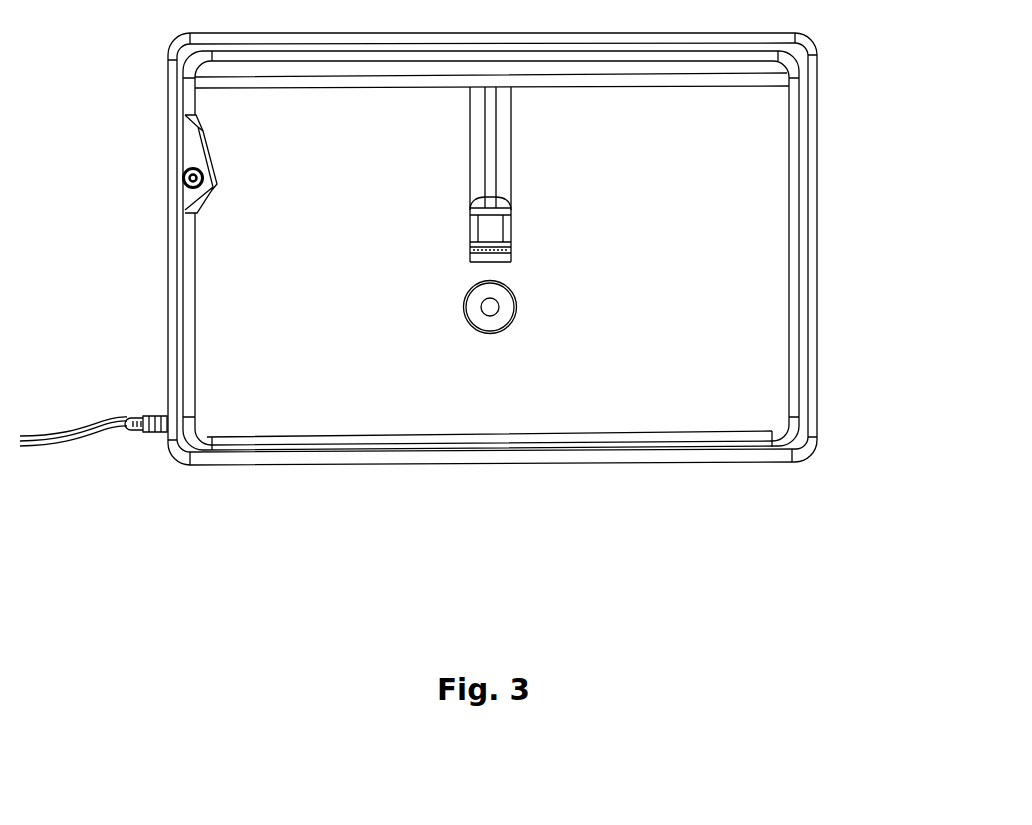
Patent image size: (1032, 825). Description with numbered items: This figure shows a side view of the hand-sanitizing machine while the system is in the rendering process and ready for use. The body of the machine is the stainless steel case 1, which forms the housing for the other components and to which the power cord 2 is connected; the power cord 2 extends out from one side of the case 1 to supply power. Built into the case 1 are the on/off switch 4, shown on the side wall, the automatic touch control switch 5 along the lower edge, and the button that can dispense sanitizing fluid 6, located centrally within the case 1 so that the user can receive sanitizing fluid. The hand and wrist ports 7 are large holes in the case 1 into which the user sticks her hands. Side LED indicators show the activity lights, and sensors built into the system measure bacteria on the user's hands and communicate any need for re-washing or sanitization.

The case 1 is at (813, 152).
The power cord 2 is at (78, 431).
The on/off switch 4 is at (182, 179).
The automatic touch control switch 5 is at (750, 430).
The button that can dispense sanitizing fluid 6 is at (500, 294).
The hand and wrist ports 7 is at (753, 325).